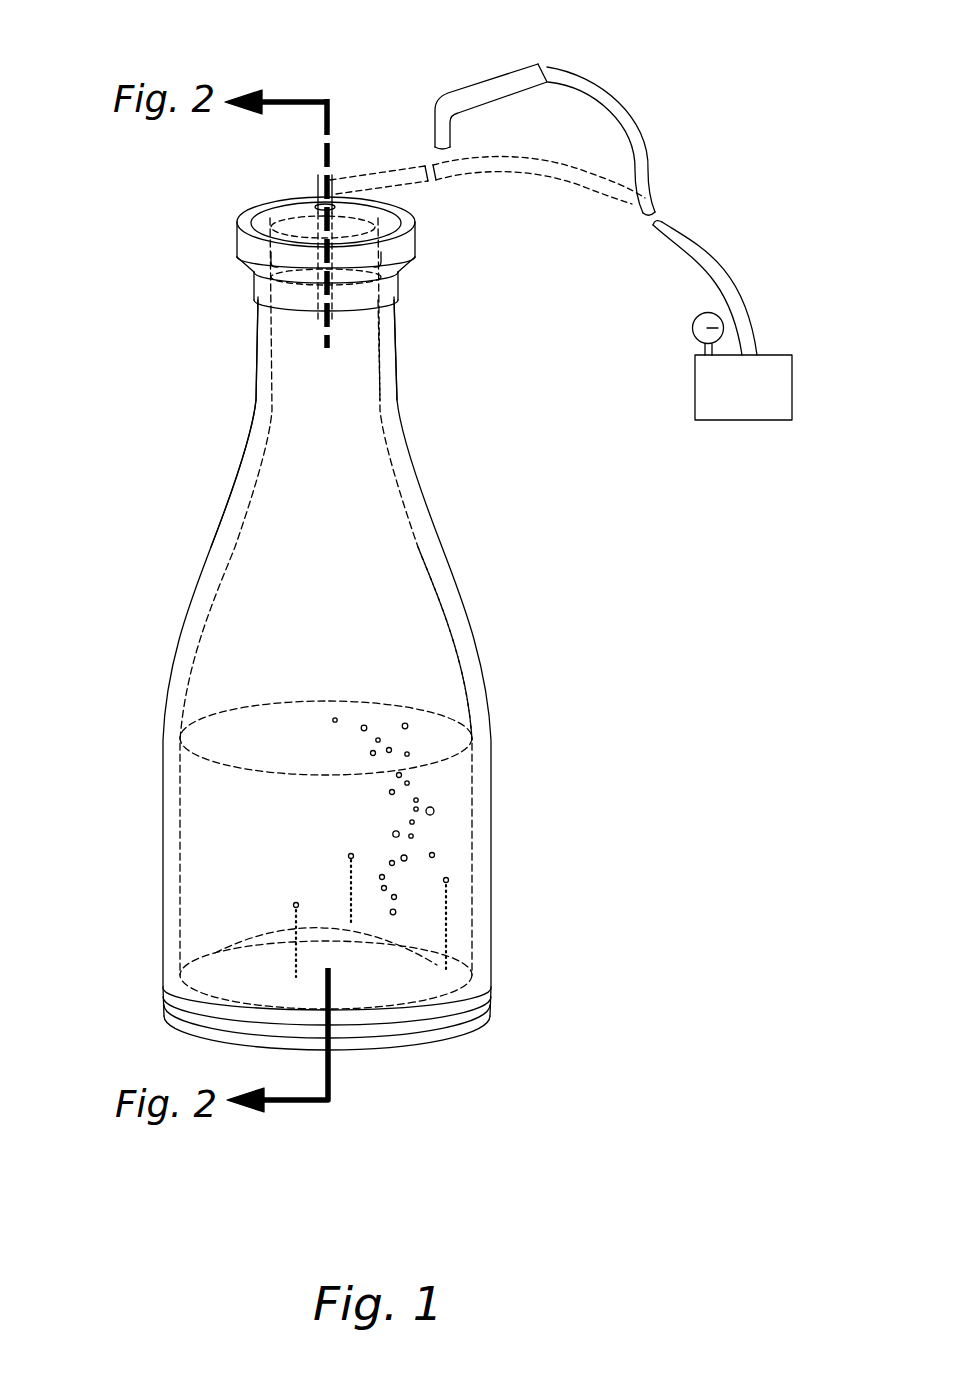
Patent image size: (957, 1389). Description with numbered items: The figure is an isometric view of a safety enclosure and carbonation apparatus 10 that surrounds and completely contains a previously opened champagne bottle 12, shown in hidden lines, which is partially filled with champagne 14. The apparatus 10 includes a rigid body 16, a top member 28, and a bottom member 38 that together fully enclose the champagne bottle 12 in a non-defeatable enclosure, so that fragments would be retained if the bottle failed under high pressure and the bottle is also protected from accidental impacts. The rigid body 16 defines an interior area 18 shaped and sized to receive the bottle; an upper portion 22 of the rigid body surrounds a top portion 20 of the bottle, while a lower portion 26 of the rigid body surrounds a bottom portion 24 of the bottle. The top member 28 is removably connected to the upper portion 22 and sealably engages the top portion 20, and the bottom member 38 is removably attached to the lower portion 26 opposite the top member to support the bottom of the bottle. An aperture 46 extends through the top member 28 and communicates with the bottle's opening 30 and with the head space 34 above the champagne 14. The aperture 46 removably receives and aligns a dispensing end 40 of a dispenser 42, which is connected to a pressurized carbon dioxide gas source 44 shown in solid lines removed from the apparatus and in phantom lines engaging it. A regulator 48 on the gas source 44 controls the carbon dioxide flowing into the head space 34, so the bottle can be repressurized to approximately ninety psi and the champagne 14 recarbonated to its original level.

The safety enclosure and carbonation apparatus 10 is at (122, 305).
The champagne bottle 12 is at (250, 482).
The champagne 14 is at (250, 827).
The rigid body 16 is at (166, 697).
The interior area 18 is at (217, 563).
The top portion of the bottle 20 is at (353, 372).
The upper portion of the rigid body 22 is at (257, 373).
The bottom portion of the bottle 24 is at (454, 856).
The lower portion of the rigid body 26 is at (175, 942).
The top member 28 is at (255, 245).
The bottle's opening 30 is at (303, 222).
The head space 34 is at (410, 582).
The bottom member 38 is at (188, 1014).
The dispensing end 40 is at (443, 133).
The dispenser 42 is at (492, 88).
The pressurized carbon dioxide gas source 44 is at (748, 402).
The aperture 46 is at (343, 197).
The regulator 48 is at (697, 335).